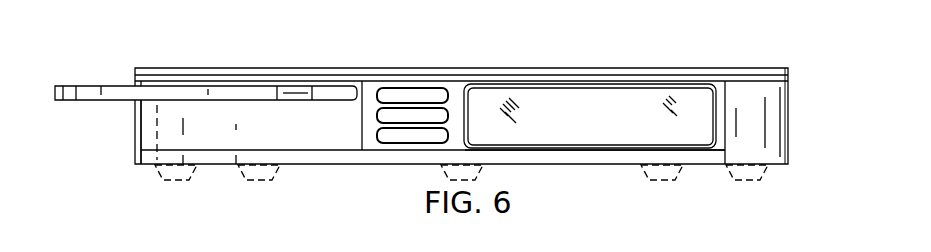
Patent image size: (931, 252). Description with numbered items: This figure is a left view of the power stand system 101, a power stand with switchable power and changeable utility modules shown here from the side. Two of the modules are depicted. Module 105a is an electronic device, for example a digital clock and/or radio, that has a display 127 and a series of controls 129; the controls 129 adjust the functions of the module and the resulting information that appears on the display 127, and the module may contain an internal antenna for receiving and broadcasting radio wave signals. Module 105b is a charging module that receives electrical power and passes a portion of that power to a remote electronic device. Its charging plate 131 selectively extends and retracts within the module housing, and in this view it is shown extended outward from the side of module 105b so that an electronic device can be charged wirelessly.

The power stand system 101 is at (768, 44).
The charging plate 131 is at (77, 85).
The charging module 105b is at (140, 134).
The controls 129 is at (376, 139).
The display 127 is at (622, 127).
The module 105a is at (541, 132).